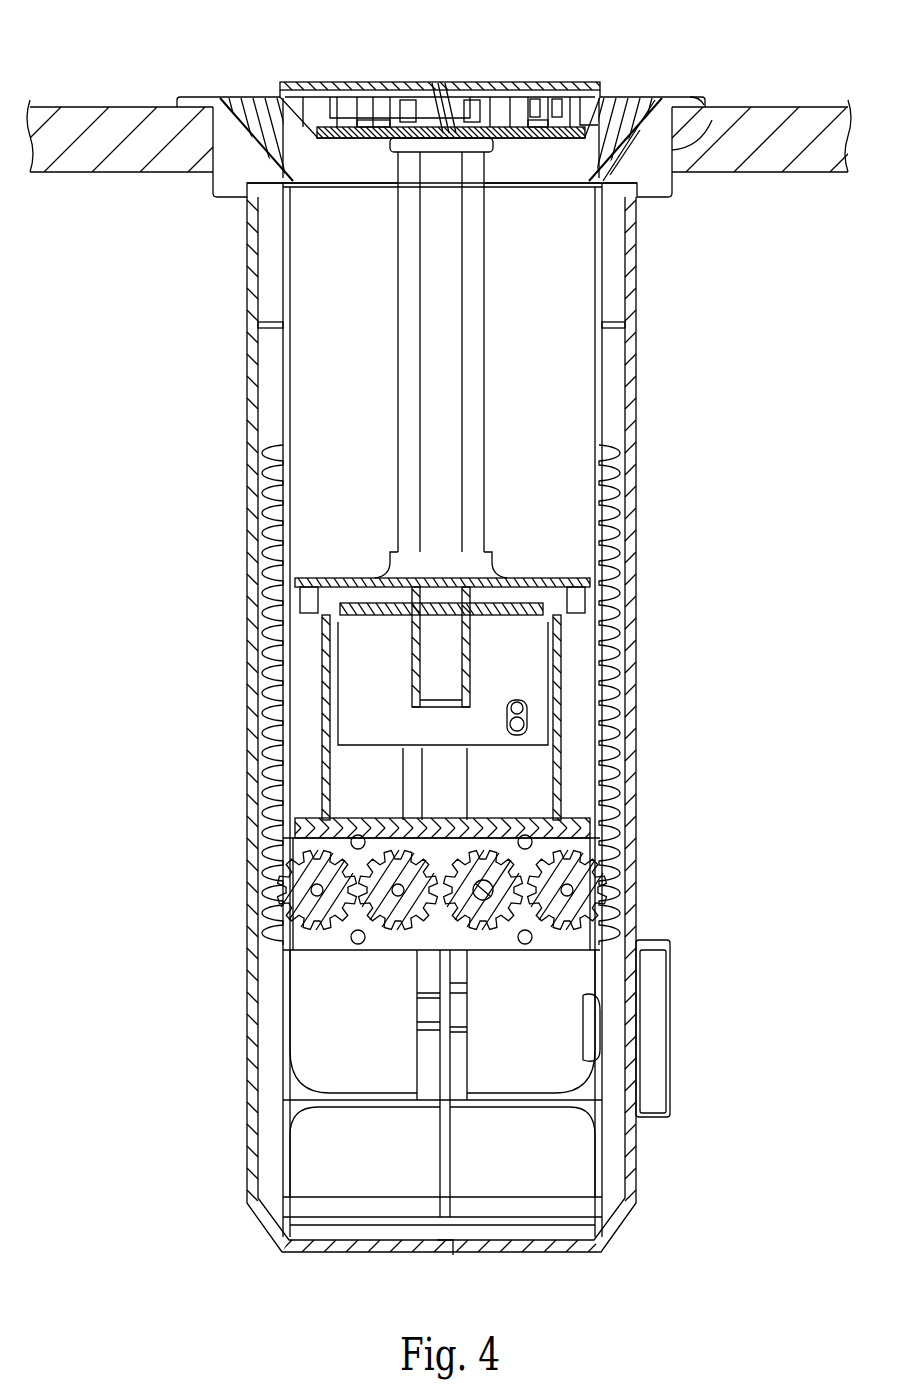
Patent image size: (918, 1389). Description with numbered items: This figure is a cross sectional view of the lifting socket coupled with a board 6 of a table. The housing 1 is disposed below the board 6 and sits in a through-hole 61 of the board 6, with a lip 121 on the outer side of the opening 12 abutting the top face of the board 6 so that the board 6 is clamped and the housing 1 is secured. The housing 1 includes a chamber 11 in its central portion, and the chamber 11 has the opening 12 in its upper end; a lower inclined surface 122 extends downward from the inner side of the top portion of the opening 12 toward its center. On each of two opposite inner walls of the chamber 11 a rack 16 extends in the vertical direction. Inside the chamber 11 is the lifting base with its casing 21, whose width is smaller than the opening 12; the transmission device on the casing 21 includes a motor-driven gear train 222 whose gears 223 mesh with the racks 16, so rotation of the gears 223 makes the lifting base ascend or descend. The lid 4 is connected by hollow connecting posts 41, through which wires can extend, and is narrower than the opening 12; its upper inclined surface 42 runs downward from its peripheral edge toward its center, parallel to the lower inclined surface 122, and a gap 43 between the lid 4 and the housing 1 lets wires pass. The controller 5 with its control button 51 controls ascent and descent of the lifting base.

The housing 1 is at (648, 706).
The lid 4 is at (495, 85).
The controller 5 is at (393, 95).
The board 6 is at (783, 127).
The chamber 11 is at (548, 487).
The opening 12 is at (540, 180).
The rack 16 is at (262, 873).
The casing 21 is at (320, 945).
The connecting post 41 is at (410, 250).
The upper inclined surface 42 is at (585, 83).
The gap 43 is at (603, 128).
The control button 51 is at (440, 87).
The through-hole 61 is at (700, 127).
The lip 121 is at (682, 100).
The lower inclined surface 122 is at (603, 195).
The gear train 222 is at (300, 935).
The gear 223 is at (297, 902).